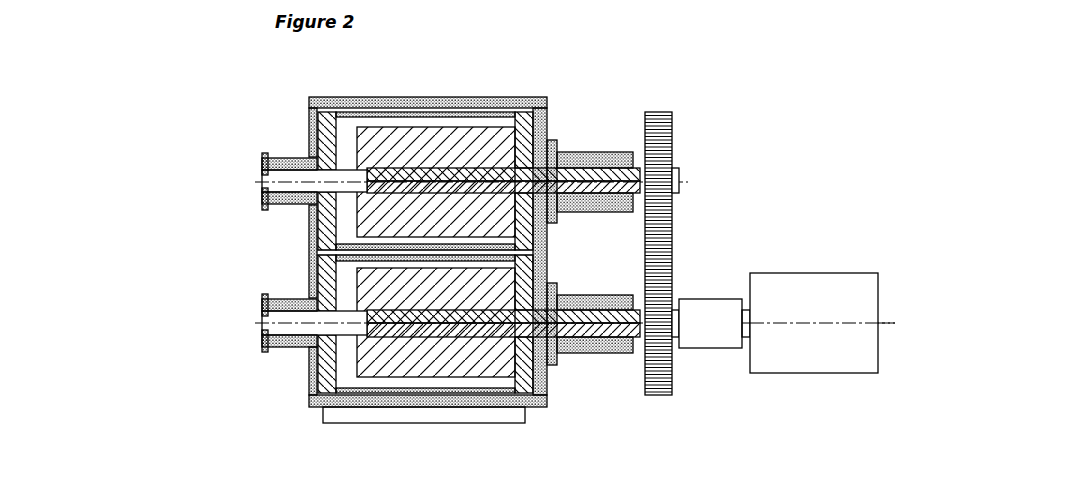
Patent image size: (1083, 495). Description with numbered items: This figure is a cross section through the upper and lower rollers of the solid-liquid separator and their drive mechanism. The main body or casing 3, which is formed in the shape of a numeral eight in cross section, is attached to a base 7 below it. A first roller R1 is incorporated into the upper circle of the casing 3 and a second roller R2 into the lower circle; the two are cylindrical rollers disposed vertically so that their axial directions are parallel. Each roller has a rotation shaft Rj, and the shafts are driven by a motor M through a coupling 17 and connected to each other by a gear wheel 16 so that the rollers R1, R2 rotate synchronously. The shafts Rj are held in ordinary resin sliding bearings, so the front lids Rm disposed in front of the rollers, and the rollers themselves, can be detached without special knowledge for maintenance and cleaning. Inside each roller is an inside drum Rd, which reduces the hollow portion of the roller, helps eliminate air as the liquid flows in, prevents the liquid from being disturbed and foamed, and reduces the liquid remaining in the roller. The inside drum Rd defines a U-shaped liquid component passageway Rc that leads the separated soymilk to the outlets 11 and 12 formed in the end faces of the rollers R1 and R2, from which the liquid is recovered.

The main body (casing) 3 is at (540, 100).
The base 7 is at (525, 419).
The outlet 11 is at (275, 183).
The outlet 12 is at (275, 320).
The gear wheel 16 is at (672, 133).
The coupling 17 is at (705, 305).
The motor M is at (866, 289).
The first roller R1 is at (477, 109).
The second roller R2 is at (375, 397).
The passageway Rc is at (363, 123).
The inside drum Rd is at (430, 140).
The rotation shaft Rj is at (588, 172).
The front lid Rm is at (308, 234).